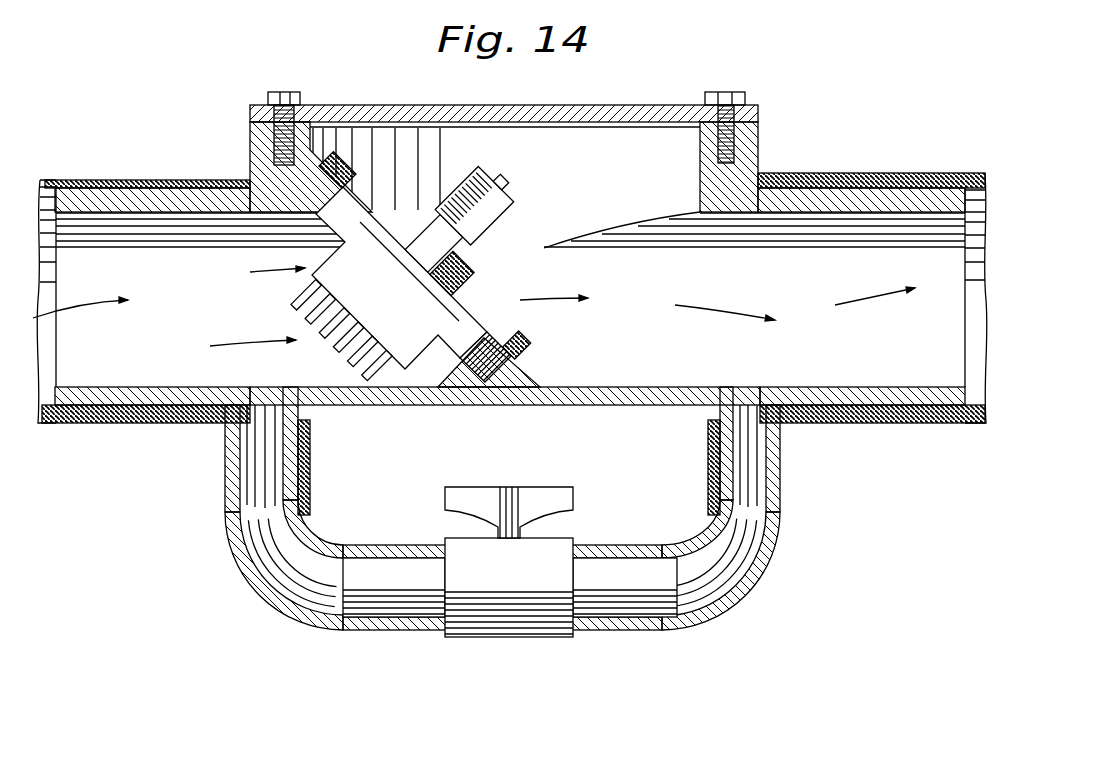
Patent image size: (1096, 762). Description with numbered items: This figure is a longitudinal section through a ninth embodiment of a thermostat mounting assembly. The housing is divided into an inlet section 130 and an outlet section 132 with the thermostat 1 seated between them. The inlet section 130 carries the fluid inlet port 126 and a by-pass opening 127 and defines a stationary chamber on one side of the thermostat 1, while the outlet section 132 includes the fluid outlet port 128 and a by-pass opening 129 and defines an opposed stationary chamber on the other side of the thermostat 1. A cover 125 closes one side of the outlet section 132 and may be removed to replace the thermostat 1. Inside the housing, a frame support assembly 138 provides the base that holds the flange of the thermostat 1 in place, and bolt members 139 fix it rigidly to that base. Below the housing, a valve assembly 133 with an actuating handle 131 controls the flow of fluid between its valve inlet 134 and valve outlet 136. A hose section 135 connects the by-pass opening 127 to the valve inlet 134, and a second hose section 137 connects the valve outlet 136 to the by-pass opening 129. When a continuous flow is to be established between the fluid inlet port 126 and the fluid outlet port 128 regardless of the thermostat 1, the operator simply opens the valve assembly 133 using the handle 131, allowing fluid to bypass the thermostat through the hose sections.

The thermostat 1 is at (493, 270).
The cover 125 is at (657, 103).
The fluid inlet port 126 is at (121, 180).
The by-pass opening 127 is at (258, 483).
The fluid outlet port 128 is at (890, 176).
The by-pass opening 129 is at (758, 478).
The inlet section 130 is at (147, 323).
The actuating handle 131 is at (519, 486).
The outlet section 132 is at (788, 343).
The valve assembly 133 is at (530, 633).
The valve inlet 134 is at (388, 602).
The hose section 135 is at (263, 598).
The valve outlet 136 is at (620, 592).
The hose section 137 is at (738, 613).
The frame support assembly 138 is at (365, 190).
The bolt members 139 is at (336, 160).